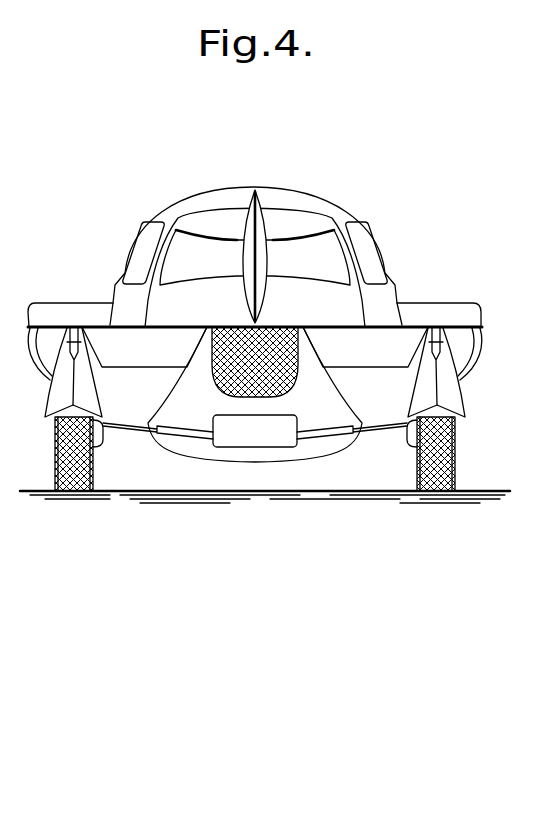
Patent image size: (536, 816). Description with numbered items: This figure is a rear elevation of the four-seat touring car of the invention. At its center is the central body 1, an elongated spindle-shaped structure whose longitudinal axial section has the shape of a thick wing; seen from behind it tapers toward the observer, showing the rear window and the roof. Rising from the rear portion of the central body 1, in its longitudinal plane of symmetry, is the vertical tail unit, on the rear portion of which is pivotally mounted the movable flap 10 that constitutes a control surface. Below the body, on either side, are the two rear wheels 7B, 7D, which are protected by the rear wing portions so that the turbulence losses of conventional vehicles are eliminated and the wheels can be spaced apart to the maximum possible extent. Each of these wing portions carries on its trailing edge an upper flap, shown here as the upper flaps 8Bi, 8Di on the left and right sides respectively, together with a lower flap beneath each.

The central body 1 is at (340, 212).
The movable flap 10 is at (256, 221).
The upper flap 8Bi is at (108, 340).
The upper flap 8Di is at (403, 338).
The wheel 7B is at (53, 456).
The wheel 7D is at (460, 459).